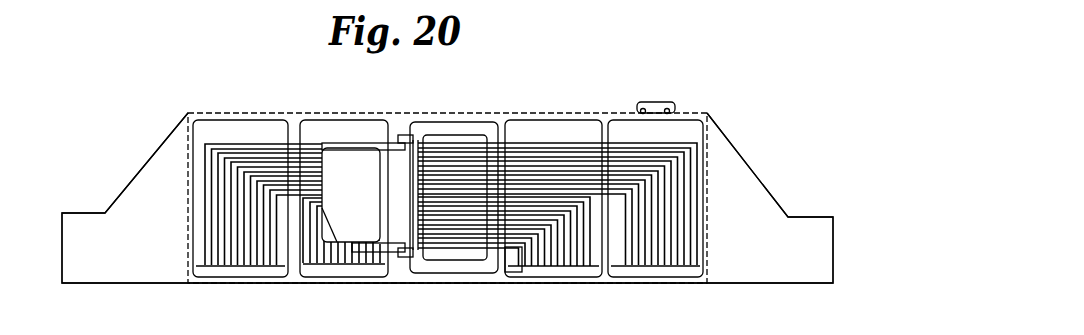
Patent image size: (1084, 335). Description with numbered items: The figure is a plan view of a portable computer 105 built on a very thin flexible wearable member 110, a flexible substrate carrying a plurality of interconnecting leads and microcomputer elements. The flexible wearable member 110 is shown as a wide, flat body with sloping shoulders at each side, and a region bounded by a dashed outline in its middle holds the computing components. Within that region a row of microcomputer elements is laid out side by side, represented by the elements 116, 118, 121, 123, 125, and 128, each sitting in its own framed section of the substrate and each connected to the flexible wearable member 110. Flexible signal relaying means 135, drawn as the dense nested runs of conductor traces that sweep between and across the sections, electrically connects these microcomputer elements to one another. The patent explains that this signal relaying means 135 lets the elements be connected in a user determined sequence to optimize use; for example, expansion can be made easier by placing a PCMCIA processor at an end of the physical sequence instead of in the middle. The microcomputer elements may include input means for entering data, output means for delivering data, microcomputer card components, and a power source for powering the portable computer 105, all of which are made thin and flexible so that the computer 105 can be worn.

The portable computer 105 is at (168, 300).
The flexible wearable member 110 is at (728, 274).
The microcomputer element 116 is at (233, 270).
The microcomputer element 118 is at (333, 275).
The microcomputer element 121 is at (345, 165).
The microcomputer element 123 is at (462, 273).
The microcomputer element 125 is at (572, 277).
The microcomputer element 128 is at (685, 133).
The flexible signal relaying means 135 is at (208, 148).